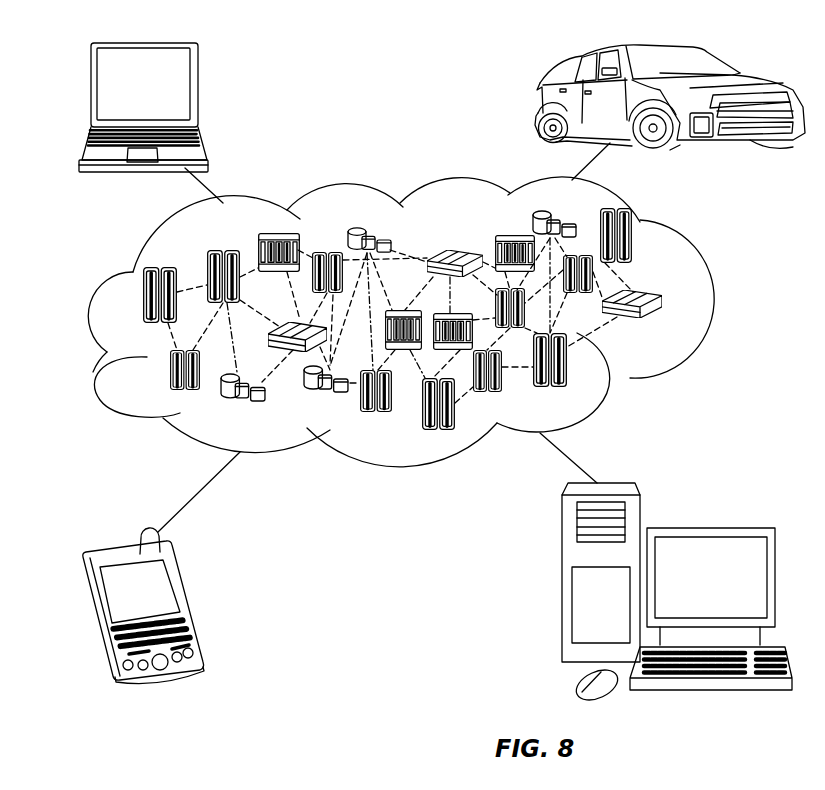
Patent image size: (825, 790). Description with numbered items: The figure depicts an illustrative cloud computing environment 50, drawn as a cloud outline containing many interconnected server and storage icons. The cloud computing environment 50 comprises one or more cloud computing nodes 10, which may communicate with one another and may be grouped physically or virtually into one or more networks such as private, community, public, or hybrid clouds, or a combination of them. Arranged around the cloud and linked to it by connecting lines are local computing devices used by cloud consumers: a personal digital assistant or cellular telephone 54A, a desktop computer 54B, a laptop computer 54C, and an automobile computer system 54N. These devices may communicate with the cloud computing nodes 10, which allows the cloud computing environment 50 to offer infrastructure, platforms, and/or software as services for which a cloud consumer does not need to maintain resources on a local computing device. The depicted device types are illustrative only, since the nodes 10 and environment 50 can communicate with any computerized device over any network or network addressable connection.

The cloud computing node 10 is at (664, 327).
The cloud computing environment 50 is at (712, 304).
The personal digital assistant or cellular telephone 54A is at (190, 600).
The desktop computer 54B is at (707, 527).
The laptop computer 54C is at (198, 92).
The automobile computer system 54N is at (537, 100).